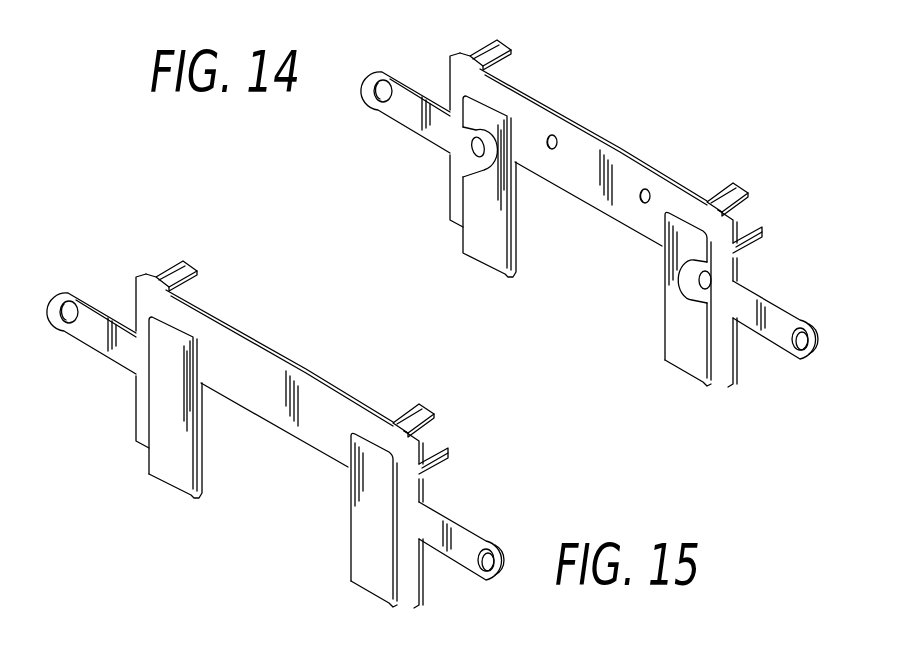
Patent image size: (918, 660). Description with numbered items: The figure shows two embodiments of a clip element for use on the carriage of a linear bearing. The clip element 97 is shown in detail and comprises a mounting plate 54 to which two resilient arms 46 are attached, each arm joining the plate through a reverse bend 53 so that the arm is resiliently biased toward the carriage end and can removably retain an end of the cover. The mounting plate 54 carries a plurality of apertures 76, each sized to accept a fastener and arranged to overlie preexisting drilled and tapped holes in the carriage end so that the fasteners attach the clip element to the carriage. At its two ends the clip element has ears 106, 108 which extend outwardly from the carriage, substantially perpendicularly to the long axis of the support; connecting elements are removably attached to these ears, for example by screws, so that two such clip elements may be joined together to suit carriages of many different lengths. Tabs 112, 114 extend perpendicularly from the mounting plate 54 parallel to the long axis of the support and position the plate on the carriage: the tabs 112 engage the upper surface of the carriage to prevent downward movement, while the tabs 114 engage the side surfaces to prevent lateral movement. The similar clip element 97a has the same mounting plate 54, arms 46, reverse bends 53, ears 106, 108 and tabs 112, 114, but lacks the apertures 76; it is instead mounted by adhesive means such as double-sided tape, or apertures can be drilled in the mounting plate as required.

In FIG. 14, the clip element 97 is at (596, 320).
In FIG. 15, the clip element 97a is at (291, 515).
In FIG. 14, the mounting plate 54 is at (513, 107).
In FIG. 15, the mounting plate 54 is at (233, 347).
In FIG. 14, the apertures 76 is at (554, 142).
In FIG. 14, the resilient arm 46 is at (472, 240).
In FIG. 15, the resilient arm 46 is at (162, 468).
In FIG. 14, the reverse bend 53 is at (510, 277).
In FIG. 15, the reverse bend 53 is at (398, 607).
In FIG. 14, the tabs 112 is at (503, 48).
In FIG. 15, the tabs 112 is at (422, 407).
In FIG. 14, the tabs 114 is at (767, 233).
In FIG. 15, the tabs 114 is at (455, 458).
In FIG. 14, the ear 106 is at (403, 117).
In FIG. 15, the ear 106 is at (92, 340).
In FIG. 14, the ear 108 is at (772, 312).
In FIG. 15, the ear 108 is at (472, 543).